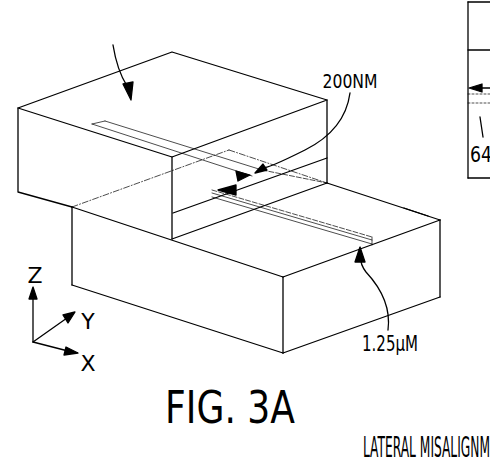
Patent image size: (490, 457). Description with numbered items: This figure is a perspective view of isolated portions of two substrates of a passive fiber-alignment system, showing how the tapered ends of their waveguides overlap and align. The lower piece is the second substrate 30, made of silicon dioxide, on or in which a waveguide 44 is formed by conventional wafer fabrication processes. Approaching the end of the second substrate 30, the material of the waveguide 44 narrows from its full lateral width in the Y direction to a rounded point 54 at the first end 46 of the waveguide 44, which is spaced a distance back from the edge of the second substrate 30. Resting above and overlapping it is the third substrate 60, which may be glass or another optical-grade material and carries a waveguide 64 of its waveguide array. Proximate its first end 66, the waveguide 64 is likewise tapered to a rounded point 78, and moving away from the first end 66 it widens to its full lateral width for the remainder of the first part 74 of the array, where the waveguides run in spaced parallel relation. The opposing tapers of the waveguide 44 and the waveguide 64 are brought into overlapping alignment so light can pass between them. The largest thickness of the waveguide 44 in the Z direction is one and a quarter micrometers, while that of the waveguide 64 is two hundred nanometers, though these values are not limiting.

The second substrate 30 is at (88, 237).
The waveguide 44 is at (297, 222).
The first end of waveguide 46 is at (262, 165).
The rounded point 54 is at (172, 215).
The third substrate 60 is at (173, 50).
The waveguide 64 is at (152, 140).
The first end of waveguide 66 is at (238, 177).
The first part of waveguide array 74 is at (118, 60).
The rounded point 78 is at (248, 173).